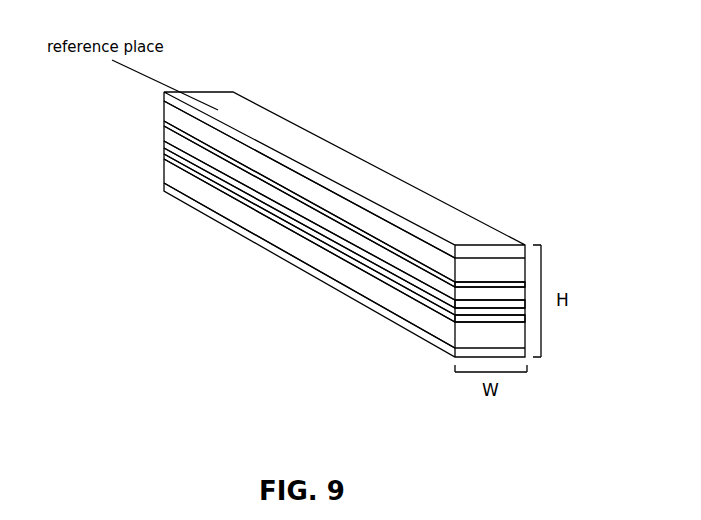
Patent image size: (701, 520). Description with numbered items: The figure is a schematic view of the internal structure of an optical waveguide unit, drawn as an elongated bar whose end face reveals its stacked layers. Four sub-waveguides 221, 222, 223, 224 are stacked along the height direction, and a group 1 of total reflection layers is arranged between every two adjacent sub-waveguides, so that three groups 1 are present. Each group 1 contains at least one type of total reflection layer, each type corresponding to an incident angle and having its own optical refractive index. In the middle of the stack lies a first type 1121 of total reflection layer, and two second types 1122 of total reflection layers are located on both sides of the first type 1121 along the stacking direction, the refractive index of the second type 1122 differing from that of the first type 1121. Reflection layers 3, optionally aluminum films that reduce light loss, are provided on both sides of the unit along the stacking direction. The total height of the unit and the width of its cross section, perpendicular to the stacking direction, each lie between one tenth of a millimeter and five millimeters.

The group of total reflection layers 1 is at (470, 112).
The reflection layer 3 is at (442, 212).
The sub-waveguide 221 is at (177, 118).
The sub-waveguide 222 is at (172, 140).
The sub-waveguide 223 is at (173, 153).
The sub-waveguide 224 is at (175, 178).
The first type of total reflection layer 1121 is at (478, 305).
The second type of total reflection layer 1122 is at (463, 280).